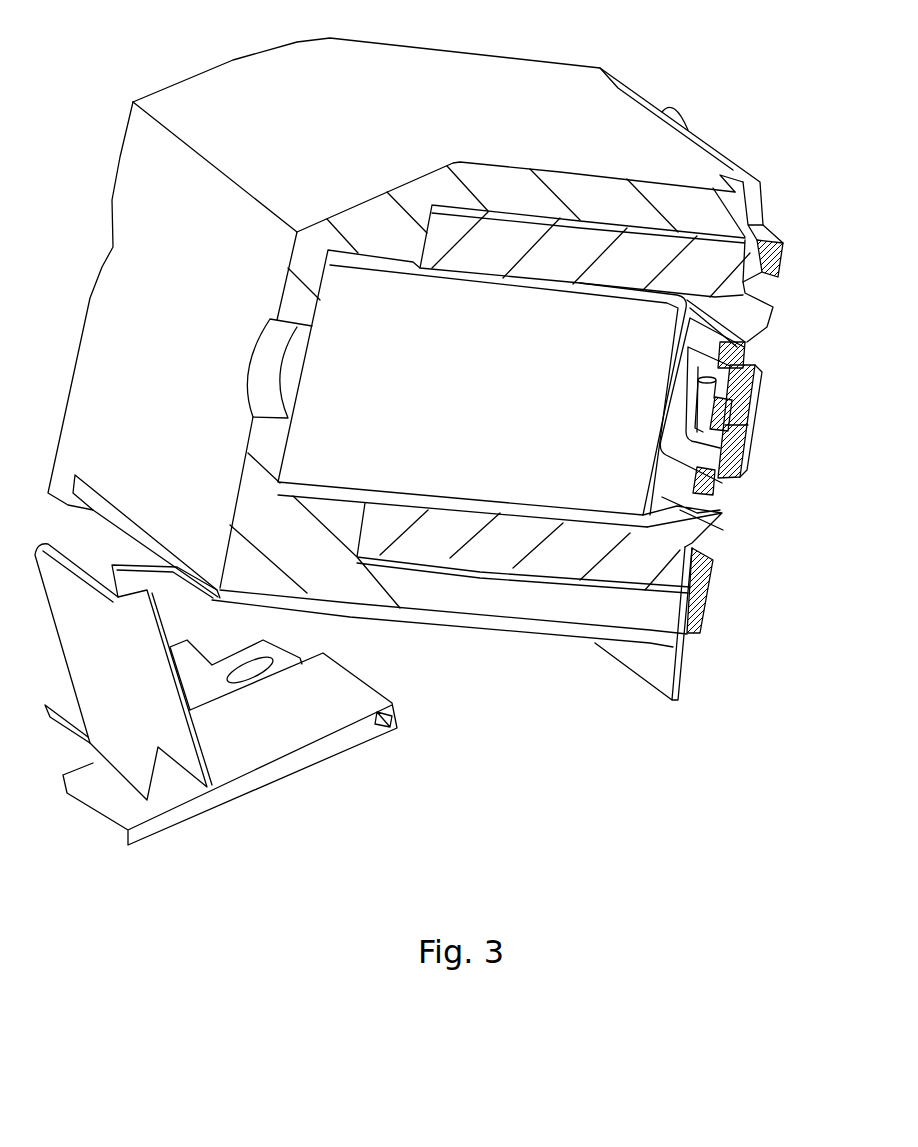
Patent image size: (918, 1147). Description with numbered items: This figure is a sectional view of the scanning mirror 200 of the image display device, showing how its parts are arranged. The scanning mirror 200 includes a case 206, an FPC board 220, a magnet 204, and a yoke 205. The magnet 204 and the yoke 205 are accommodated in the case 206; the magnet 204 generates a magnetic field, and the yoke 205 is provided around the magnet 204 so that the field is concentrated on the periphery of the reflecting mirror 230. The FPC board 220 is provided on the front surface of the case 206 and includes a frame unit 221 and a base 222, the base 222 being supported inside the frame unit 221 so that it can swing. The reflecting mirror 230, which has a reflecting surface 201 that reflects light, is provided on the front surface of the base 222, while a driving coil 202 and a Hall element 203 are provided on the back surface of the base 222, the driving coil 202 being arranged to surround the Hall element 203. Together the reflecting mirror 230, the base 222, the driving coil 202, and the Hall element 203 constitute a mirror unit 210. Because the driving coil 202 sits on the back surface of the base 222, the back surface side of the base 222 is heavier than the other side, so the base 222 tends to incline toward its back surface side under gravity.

The scanning mirror 200 is at (74, 41).
The reflecting surface 201 is at (762, 393).
The driving coil 202 is at (747, 350).
The Hall element 203 is at (752, 419).
The magnet 204 is at (475, 485).
The yoke 205 is at (765, 228).
The case 206 is at (617, 88).
The mirror unit 210 is at (737, 435).
The FPC board 220 is at (686, 638).
The frame unit 221 is at (710, 590).
The base 222 is at (733, 497).
The reflecting mirror 230 is at (727, 480).